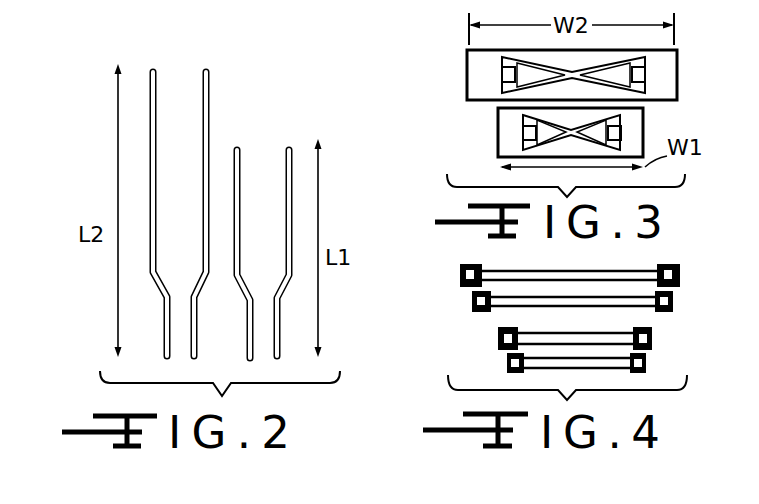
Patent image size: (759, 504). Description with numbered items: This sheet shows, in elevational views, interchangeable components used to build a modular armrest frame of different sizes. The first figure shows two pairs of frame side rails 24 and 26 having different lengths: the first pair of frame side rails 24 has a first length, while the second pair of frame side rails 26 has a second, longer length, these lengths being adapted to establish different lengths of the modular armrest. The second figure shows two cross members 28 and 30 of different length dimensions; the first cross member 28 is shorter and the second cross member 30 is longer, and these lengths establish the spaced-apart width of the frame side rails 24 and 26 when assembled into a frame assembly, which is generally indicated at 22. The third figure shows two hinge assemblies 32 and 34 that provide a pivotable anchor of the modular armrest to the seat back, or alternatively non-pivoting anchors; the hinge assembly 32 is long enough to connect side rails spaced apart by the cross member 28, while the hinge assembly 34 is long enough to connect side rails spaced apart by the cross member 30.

In FIG. 3, the frame assembly 22 is at (412, 5).
In FIG. 2, the first pair of frame side rails 24 is at (264, 138).
In FIG. 2, the second pair of frame side rails 26 is at (226, 102).
In FIG. 3, the first cross member 28 is at (498, 135).
In FIG. 3, the second cross member 30 is at (678, 78).
In FIG. 4, the hinge assembly 32 is at (664, 352).
In FIG. 4, the hinge assembly 34 is at (690, 286).